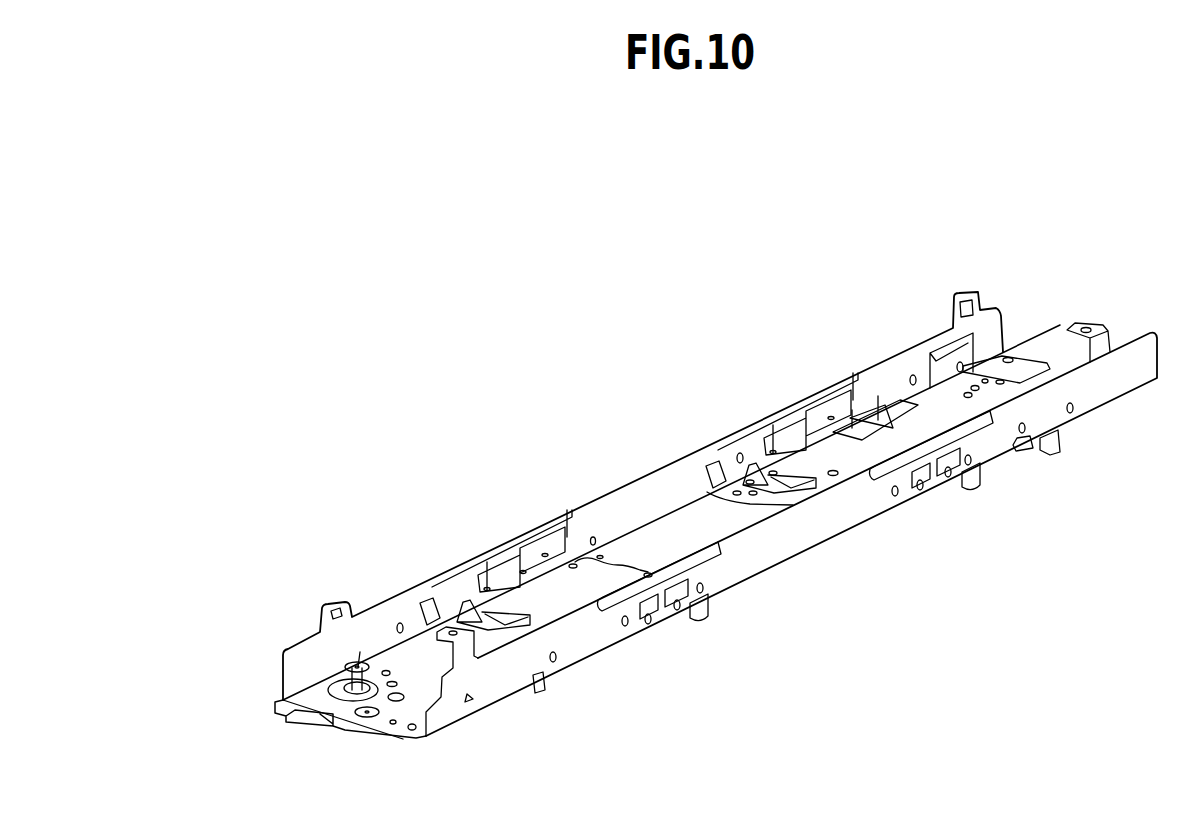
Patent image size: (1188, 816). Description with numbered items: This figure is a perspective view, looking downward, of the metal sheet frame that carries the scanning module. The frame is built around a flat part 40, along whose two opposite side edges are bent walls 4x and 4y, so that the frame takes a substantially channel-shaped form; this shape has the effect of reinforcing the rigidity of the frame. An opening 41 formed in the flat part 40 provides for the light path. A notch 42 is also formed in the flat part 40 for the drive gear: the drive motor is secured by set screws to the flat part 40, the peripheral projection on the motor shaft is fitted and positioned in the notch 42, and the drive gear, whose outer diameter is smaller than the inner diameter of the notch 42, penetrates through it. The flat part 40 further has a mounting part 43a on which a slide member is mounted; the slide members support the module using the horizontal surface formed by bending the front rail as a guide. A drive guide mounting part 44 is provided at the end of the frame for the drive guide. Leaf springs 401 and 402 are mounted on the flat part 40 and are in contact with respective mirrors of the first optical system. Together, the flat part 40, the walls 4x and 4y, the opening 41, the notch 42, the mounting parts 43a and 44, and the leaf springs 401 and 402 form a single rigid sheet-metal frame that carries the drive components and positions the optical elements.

The flat part 40 is at (510, 548).
The opening 41 is at (637, 543).
The notch 42 is at (352, 668).
The mounting part 43a is at (1008, 357).
The drive guide mounting part 44 is at (404, 745).
The leaf spring 401 is at (535, 598).
The leaf spring 402 is at (700, 563).
The side wall 4x is at (773, 552).
The side wall 4y is at (680, 458).